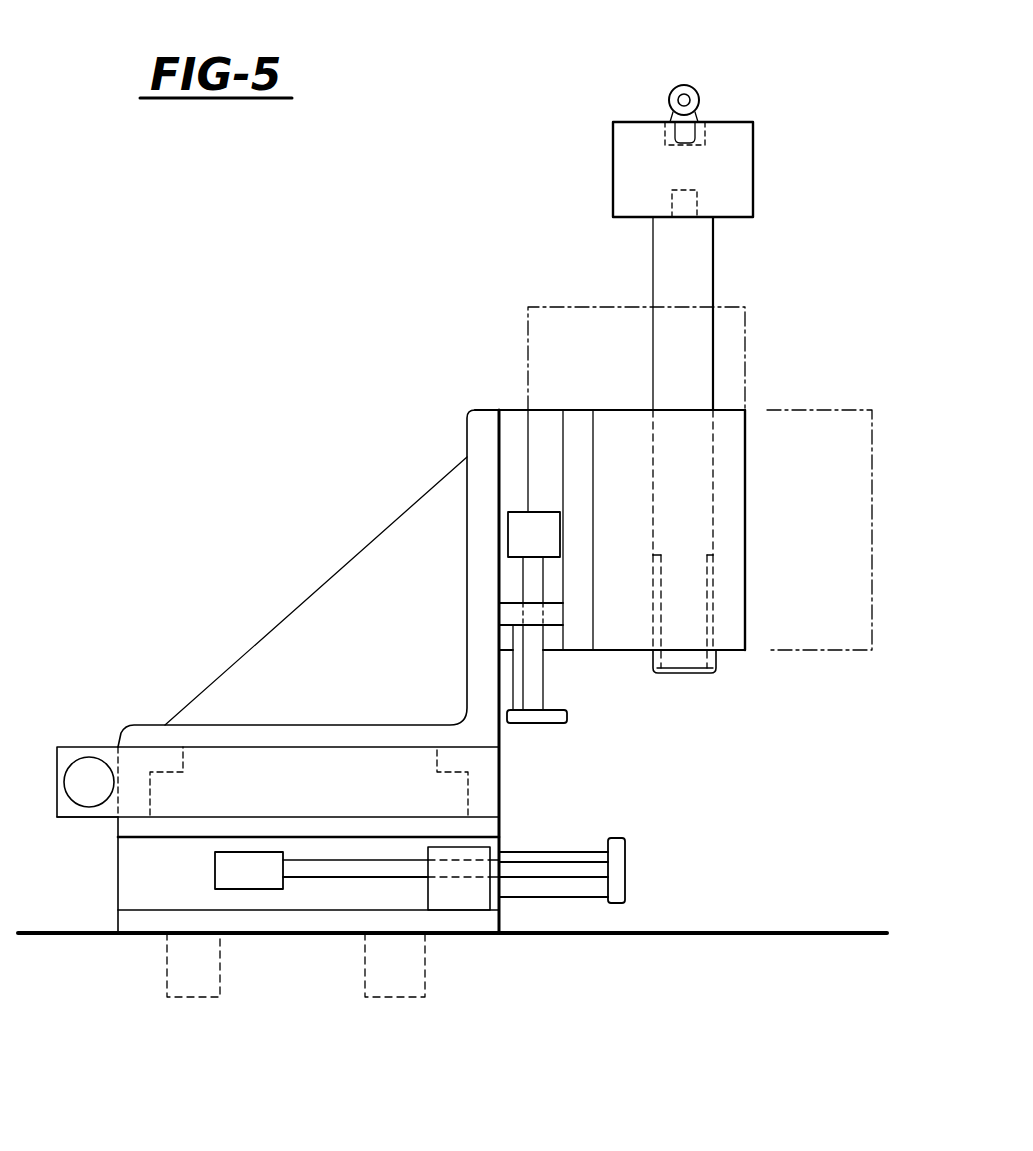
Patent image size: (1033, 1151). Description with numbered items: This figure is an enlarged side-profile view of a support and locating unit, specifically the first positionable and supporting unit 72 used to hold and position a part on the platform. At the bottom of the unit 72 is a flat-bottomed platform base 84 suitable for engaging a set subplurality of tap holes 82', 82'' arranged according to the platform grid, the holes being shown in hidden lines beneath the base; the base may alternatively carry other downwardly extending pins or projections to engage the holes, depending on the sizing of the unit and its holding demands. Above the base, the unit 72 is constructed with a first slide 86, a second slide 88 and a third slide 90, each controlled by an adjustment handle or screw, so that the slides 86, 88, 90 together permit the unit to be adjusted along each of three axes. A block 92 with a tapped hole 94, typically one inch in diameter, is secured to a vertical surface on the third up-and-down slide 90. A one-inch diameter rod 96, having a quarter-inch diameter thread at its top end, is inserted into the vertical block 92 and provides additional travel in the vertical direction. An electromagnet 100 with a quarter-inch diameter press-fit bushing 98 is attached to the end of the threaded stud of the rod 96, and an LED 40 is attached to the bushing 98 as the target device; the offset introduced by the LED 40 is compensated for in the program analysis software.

The LED 40 is at (697, 93).
The positionable and supporting unit 72 is at (345, 448).
The tap hole 82' is at (226, 991).
The tap hole 82'' is at (428, 991).
The platform base 84 is at (118, 882).
The first slide 86 is at (558, 852).
The second slide 88 is at (90, 747).
The third slide 90 is at (535, 680).
The block 92 is at (715, 625).
The tapped hole 94 is at (708, 580).
The rod 96 is at (690, 247).
The press-fit bushing 98 is at (703, 138).
The electromagnet 100 is at (755, 152).